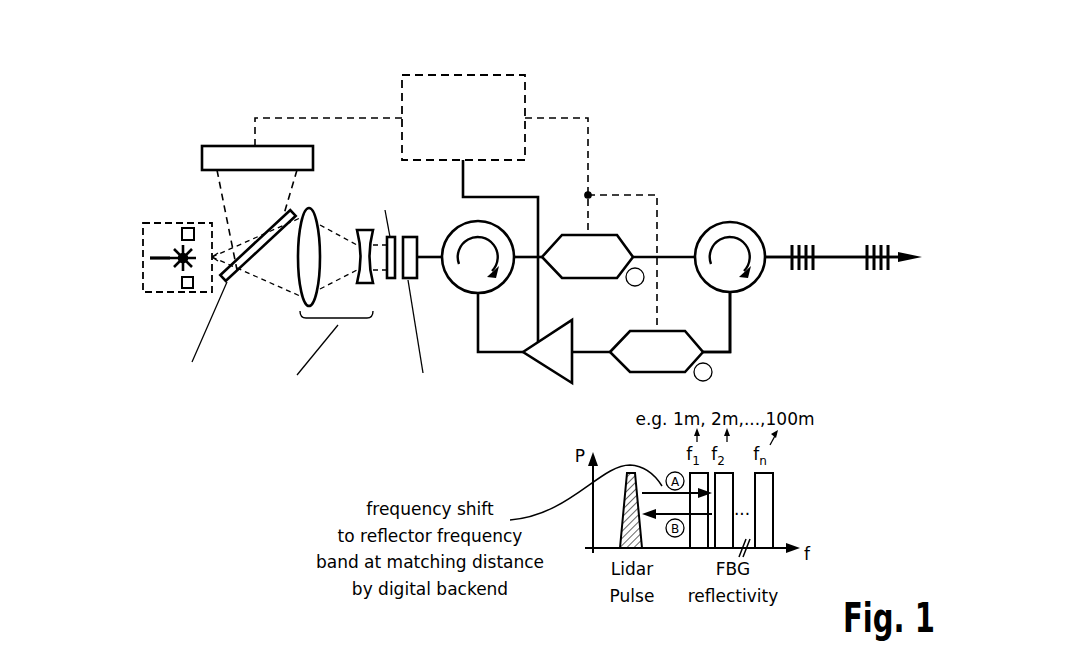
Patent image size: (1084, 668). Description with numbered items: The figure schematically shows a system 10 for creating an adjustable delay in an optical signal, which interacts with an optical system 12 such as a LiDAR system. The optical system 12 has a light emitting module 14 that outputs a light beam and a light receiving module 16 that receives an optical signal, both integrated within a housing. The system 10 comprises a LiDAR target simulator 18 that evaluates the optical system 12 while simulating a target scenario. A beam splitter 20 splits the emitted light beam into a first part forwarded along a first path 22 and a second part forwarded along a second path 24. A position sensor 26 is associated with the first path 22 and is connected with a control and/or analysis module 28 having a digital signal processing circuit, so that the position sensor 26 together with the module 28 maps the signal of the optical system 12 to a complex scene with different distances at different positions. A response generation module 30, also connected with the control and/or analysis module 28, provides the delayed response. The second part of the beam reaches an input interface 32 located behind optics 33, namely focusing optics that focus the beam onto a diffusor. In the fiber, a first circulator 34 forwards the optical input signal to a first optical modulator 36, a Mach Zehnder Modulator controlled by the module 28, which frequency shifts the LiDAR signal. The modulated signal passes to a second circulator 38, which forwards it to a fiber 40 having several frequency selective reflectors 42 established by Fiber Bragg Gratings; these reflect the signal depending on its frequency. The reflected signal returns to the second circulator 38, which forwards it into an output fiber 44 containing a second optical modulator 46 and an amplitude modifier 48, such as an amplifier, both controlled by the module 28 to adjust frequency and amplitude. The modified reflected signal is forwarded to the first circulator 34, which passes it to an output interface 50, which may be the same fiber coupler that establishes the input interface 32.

The system 10 is at (784, 78).
The optical system 12 is at (143, 250).
The light emitting module 14 is at (182, 232).
The light receiving module 16 is at (182, 285).
The LiDAR target simulator 18 is at (652, 108).
The beam splitter 20 is at (240, 283).
The first path 22 is at (307, 190).
The second path 24 is at (270, 310).
The position sensor 26 is at (230, 146).
The control and/or analysis module 28 is at (427, 75).
The response generation module 30 is at (682, 168).
The input interface 32 is at (418, 224).
The optics 33 is at (335, 345).
The first circulator 34 is at (467, 292).
The first optical modulator 36 is at (576, 235).
The second circulator 38 is at (740, 222).
The fiber 40 is at (841, 220).
The frequency selective reflectors 42 is at (798, 232).
The output fiber 44 is at (733, 352).
The second optical modulator 46 is at (673, 331).
The amplitude modifier 48 is at (574, 332).
The output interface 50 is at (396, 302).